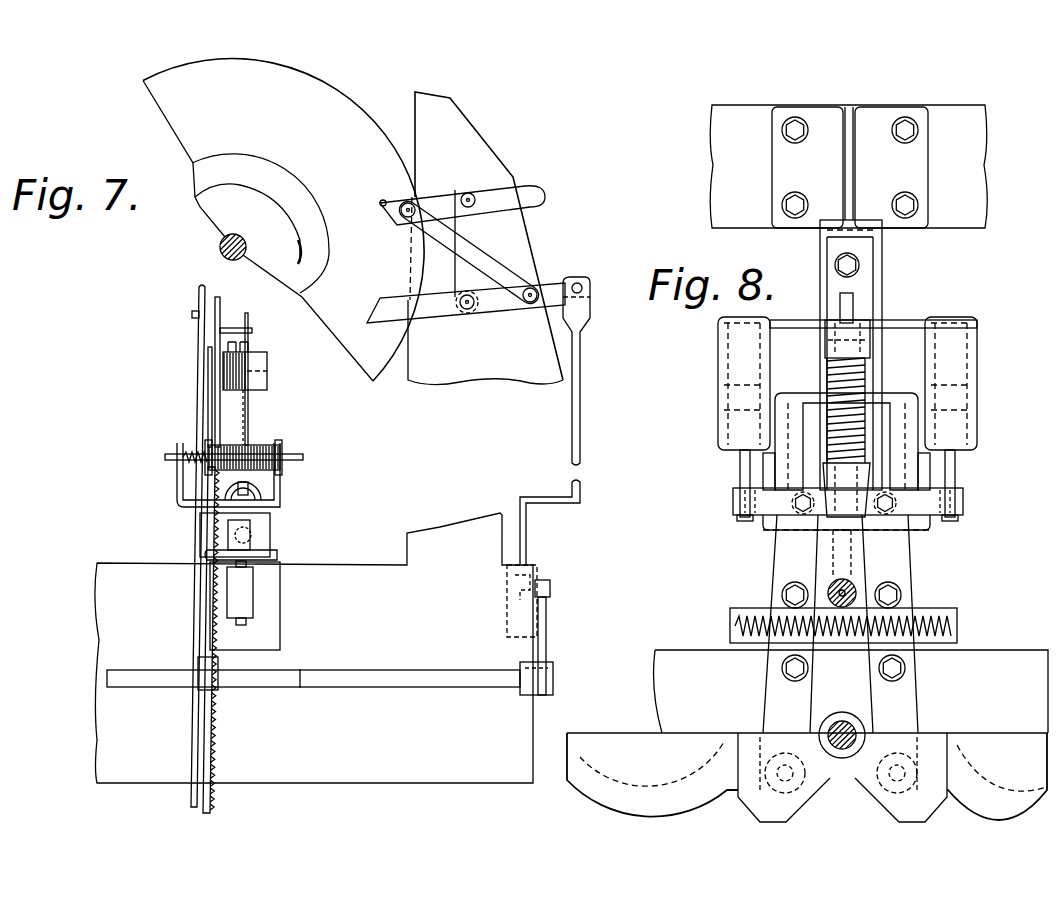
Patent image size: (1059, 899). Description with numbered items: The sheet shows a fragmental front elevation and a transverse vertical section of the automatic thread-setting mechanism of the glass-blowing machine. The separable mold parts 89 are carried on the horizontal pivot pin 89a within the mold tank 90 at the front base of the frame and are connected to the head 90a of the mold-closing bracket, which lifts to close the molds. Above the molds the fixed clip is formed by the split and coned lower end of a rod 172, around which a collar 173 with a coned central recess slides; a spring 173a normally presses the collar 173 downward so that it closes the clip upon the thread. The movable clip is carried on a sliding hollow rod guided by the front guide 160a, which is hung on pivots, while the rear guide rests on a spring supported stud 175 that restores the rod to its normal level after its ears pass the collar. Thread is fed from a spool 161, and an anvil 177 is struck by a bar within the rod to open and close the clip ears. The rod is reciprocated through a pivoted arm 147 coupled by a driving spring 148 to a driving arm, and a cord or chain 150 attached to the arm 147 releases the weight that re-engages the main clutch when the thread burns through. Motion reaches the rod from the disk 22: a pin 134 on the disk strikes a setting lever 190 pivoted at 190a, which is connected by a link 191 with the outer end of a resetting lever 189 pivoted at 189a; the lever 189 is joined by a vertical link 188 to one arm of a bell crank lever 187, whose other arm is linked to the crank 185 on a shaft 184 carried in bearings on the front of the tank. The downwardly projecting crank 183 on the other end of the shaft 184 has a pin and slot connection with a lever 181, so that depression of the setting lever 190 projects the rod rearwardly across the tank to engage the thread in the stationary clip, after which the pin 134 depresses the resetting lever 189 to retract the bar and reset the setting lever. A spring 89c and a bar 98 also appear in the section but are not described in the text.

In FIG. 7, the disk 22 is at (315, 105).
In FIG. 7, the pin 134 is at (370, 188).
In FIG. 7, the setting lever 190 is at (438, 214).
In FIG. 7, the pivot of setting lever 190a is at (483, 205).
In FIG. 7, the link 191 is at (512, 263).
In FIG. 7, the resetting lever 189 is at (557, 287).
In FIG. 7, the pivot of resetting lever 189a is at (467, 308).
In FIG. 7, the vertical link 188 is at (583, 372).
In FIG. 7, the bell crank lever 187 is at (525, 562).
In FIG. 7, the mold tank 90 is at (331, 585).
In FIG. 8, the mold tank 90 is at (988, 680).
In FIG. 7, the spring supported stud 175 is at (243, 626).
In FIG. 7, the cord or chain 150 is at (212, 712).
In FIG. 7, the shaft 184 is at (438, 673).
In FIG. 7, the crank 185 is at (545, 630).
In FIG. 7, the vertical rod 181 is at (191, 727).
In FIG. 7, the downwardly projecting crank 183 is at (203, 748).
In FIG. 7, the pivoted arm 147 is at (250, 415).
In FIG. 7, the spring 148 is at (230, 367).
In FIG. 7, the spool 161 is at (279, 452).
In FIG. 7, the front guide 160a is at (270, 535).
In FIG. 7, the anvil 177 is at (228, 537).
In FIG. 8, the rod 172 is at (857, 303).
In FIG. 8, the spring 173a is at (870, 350).
In FIG. 8, the collar 173 is at (855, 497).
In FIG. 8, the head of bracket 90a is at (920, 527).
In FIG. 8, the spring 89c is at (947, 622).
In FIG. 8, the spring bar 98 is at (943, 636).
In FIG. 8, the horizontal pivot pin 89a is at (845, 722).
In FIG. 8, the separable mold parts 89 is at (603, 753).